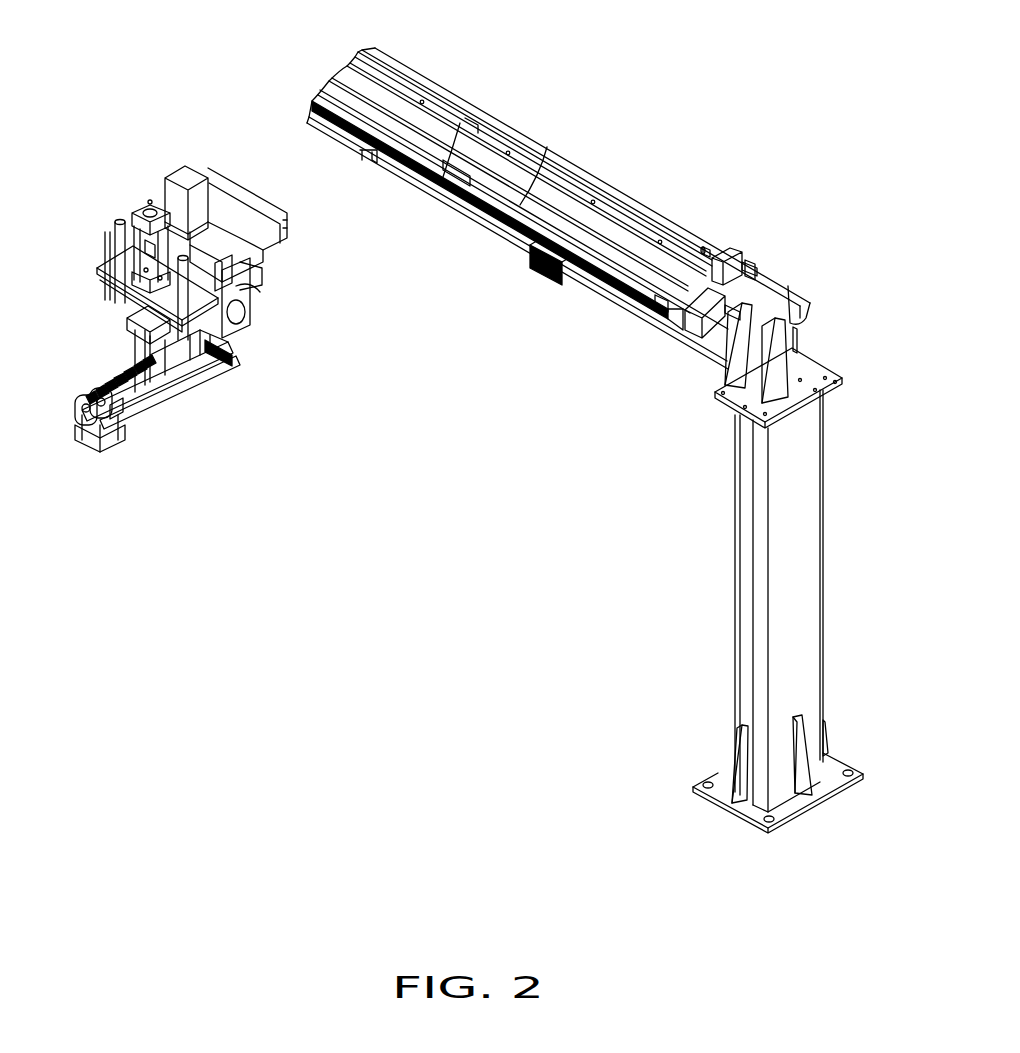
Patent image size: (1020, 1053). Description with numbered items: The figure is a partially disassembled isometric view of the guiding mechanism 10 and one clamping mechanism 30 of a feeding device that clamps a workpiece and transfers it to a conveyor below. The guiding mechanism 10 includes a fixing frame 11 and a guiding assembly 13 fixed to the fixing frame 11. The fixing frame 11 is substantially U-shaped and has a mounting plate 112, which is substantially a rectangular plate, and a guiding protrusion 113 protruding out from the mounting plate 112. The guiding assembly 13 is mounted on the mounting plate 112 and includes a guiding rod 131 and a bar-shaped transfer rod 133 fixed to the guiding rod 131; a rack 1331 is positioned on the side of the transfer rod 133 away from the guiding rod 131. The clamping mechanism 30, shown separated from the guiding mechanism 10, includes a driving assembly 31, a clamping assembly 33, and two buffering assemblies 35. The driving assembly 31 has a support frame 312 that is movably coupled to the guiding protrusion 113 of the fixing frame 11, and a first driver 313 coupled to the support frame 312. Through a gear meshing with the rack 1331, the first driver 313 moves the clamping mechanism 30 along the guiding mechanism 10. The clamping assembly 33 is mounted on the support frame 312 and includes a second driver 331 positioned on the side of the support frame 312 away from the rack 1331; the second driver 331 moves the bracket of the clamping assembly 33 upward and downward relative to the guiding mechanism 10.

The guiding mechanism 10 is at (680, 210).
The fixing frame 11 is at (786, 505).
The mounting plate 112 is at (728, 337).
The guiding protrusion 113 is at (380, 72).
The guiding assembly 13 is at (558, 70).
The guiding rod 131 is at (522, 200).
The transfer rod 133 is at (465, 122).
The rack 1331 is at (597, 277).
The clamping mechanism 30 is at (167, 140).
The driving assembly 31 is at (246, 262).
The support frame 312 is at (235, 222).
The first driver 313 is at (192, 173).
The clamping assembly 33 is at (113, 355).
The second driver 331 is at (132, 208).
The buffering assembly 35 is at (118, 441).